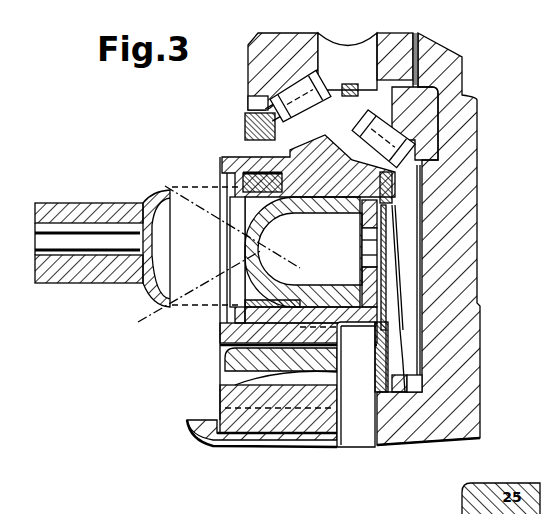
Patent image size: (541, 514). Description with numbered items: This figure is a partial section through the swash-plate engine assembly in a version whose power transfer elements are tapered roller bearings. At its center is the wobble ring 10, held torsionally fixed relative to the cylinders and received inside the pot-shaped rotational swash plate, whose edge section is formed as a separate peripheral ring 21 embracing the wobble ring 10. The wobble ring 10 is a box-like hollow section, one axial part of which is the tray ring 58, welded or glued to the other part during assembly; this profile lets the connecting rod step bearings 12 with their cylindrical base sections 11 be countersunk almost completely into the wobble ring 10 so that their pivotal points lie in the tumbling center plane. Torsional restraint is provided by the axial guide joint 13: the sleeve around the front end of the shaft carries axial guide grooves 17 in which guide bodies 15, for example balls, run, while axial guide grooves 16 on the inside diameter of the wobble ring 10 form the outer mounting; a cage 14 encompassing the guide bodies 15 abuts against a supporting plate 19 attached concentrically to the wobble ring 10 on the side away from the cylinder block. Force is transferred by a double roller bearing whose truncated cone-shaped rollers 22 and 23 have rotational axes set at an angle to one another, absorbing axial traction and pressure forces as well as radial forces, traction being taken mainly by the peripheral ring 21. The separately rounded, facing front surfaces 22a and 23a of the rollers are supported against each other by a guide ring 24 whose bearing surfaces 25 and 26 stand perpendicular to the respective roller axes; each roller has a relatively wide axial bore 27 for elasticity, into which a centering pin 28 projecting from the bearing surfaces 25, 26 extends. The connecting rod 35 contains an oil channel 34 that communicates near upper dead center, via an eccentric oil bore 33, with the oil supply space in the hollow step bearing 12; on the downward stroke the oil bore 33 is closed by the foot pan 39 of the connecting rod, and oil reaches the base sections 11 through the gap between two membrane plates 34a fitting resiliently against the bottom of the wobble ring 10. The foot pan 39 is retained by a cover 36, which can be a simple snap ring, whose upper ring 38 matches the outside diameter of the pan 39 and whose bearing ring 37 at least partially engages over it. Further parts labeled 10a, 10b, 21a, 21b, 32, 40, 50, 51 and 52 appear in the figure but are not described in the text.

The wobble ring 10 is at (226, 157).
The carrier hub portion 10a is at (362, 174).
The carrier hub portion 10b is at (320, 171).
The base section 11 is at (310, 279).
The connecting rod step bearing 12 is at (270, 220).
The axial guide joint 13 is at (215, 359).
The cage 14 is at (228, 368).
The guide body 15 is at (340, 378).
The axial guide groove 16 is at (230, 336).
The axial guide groove 17 is at (220, 404).
The supporting plate 19 is at (375, 358).
The peripheral ring 21 is at (258, 50).
The bearing block part 21a is at (415, 123).
The roller 21b is at (296, 98).
The truncated cone-shaped roller 22 is at (248, 97).
The front surface 22a is at (326, 70).
The truncated cone-shaped roller 23 is at (408, 136).
The front surface 23a is at (350, 84).
The guide ring 24 is at (395, 56).
The bearing surface 25 is at (309, 47).
The bearing surface 26 is at (416, 84).
The axial bore 27 is at (247, 124).
The centering pin 28 is at (372, 137).
The pin 32 is at (393, 252).
The eccentric oil bore 33 is at (235, 240).
The oil channel 34 is at (50, 208).
The membrane plate 34a is at (393, 228).
The connecting rod 35 is at (80, 205).
The cover 36 is at (235, 309).
The bearing ring 37 is at (226, 186).
The upper ring 38 is at (236, 206).
The foot pan 39 is at (147, 290).
The axis 40 is at (228, 281).
The spring 50 is at (363, 247).
The spring leaf 51 is at (405, 282).
The spring leaf 52 is at (395, 295).
The tray ring 58 is at (362, 221).